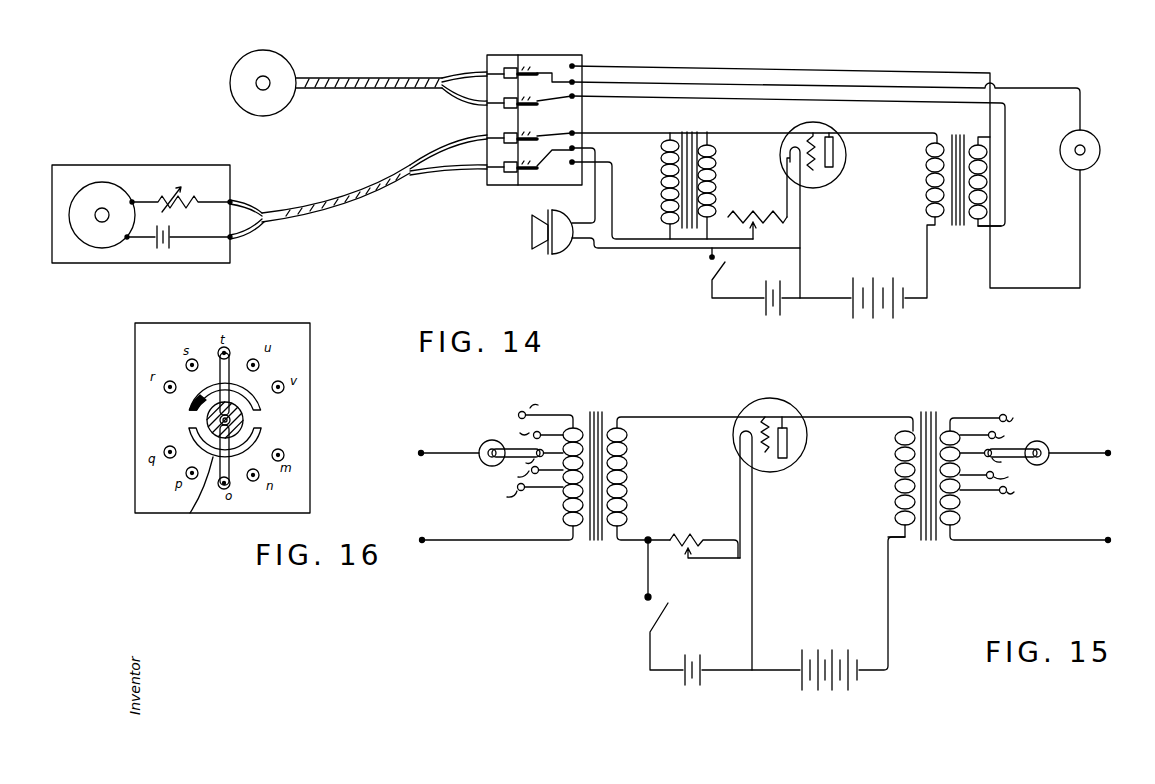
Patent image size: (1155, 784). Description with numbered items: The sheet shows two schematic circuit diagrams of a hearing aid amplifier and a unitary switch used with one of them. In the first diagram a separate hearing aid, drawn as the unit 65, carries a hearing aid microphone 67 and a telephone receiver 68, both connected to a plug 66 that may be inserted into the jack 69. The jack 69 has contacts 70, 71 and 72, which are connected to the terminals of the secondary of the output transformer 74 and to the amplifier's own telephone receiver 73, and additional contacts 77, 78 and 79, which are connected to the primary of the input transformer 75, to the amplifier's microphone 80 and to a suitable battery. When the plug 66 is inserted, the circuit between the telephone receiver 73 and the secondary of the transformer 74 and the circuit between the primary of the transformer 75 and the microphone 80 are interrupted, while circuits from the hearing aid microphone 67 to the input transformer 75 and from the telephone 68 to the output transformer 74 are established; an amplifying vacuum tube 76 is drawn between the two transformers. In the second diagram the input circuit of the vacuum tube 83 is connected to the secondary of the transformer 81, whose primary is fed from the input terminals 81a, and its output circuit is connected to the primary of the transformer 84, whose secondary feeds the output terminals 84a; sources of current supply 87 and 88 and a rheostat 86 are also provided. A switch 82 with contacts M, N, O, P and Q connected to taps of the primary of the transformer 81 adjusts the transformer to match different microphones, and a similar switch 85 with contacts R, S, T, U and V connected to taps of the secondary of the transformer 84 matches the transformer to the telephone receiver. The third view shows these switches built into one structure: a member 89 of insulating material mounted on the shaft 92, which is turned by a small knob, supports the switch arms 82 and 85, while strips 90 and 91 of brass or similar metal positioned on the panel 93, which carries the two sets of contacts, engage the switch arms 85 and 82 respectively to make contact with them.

In FIG. 14, the transmitter unit 65 is at (164, 174).
In FIG. 14, the plug 66 is at (492, 120).
In FIG. 14, the hearing aid microphone 67 is at (98, 190).
In FIG. 14, the telephone receiver 68 is at (283, 100).
In FIG. 14, the jack 69 is at (564, 54).
In FIG. 14, the contact 70 is at (574, 65).
In FIG. 14, the contact 71 is at (566, 101).
In FIG. 14, the contact 72 is at (551, 70).
In FIG. 14, the telephone receiver 73 is at (1072, 166).
In FIG. 14, the transformer 74 is at (952, 136).
In FIG. 14, the transformer 75 is at (688, 130).
In FIG. 14, the vacuum tube amplifier 76 is at (787, 147).
In FIG. 14, the contact 77 is at (553, 140).
In FIG. 14, the contact 78 is at (560, 166).
In FIG. 14, the contact 79 is at (562, 154).
In FIG. 14, the microphone 80 is at (537, 233).
In FIG. 15, the transformer 81 is at (596, 416).
In FIG. 15, the input terminals 81a is at (422, 458).
In FIG. 15, the switch 82 is at (507, 450).
In FIG. 16, the switch 82 is at (238, 467).
In FIG. 15, the vacuum tube 83 is at (781, 396).
In FIG. 15, the transformer 84 is at (950, 402).
In FIG. 15, the output terminals 84a is at (1108, 458).
In FIG. 15, the switch 85 is at (1015, 447).
In FIG. 16, the switch 85 is at (187, 387).
In FIG. 15, the rheostat 86 is at (693, 538).
In FIG. 15, the source of current supply 87 is at (708, 665).
In FIG. 15, the source of current supply 88 is at (846, 650).
In FIG. 16, the member of insulating material 89 is at (253, 421).
In FIG. 16, the strip 90 is at (263, 404).
In FIG. 16, the strip 91 is at (193, 501).
In FIG. 16, the shaft 92 is at (207, 425).
In FIG. 16, the panel 93 is at (153, 364).